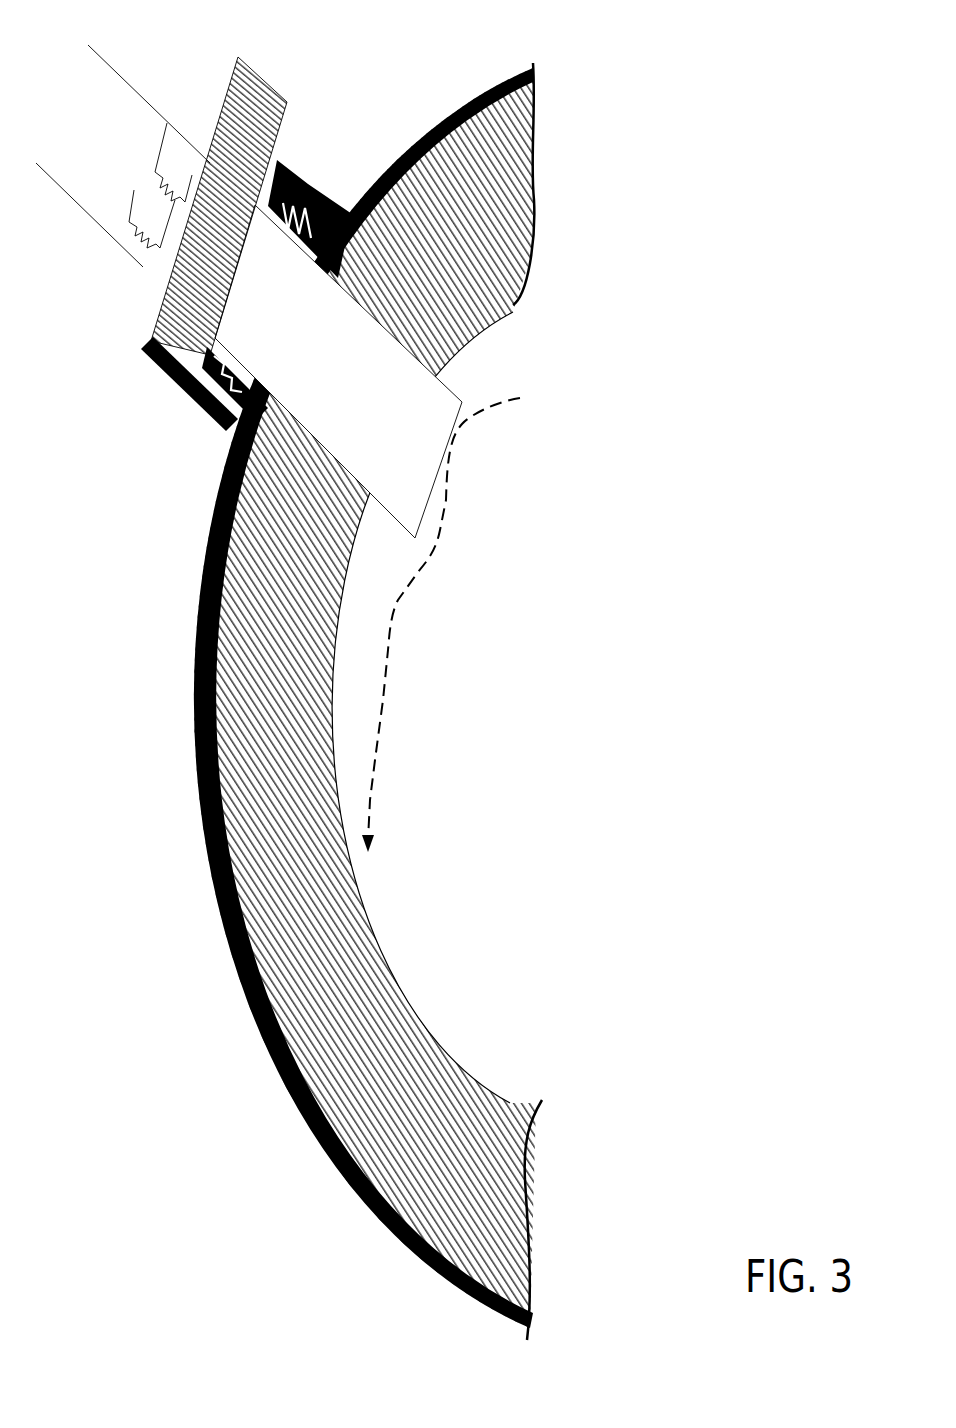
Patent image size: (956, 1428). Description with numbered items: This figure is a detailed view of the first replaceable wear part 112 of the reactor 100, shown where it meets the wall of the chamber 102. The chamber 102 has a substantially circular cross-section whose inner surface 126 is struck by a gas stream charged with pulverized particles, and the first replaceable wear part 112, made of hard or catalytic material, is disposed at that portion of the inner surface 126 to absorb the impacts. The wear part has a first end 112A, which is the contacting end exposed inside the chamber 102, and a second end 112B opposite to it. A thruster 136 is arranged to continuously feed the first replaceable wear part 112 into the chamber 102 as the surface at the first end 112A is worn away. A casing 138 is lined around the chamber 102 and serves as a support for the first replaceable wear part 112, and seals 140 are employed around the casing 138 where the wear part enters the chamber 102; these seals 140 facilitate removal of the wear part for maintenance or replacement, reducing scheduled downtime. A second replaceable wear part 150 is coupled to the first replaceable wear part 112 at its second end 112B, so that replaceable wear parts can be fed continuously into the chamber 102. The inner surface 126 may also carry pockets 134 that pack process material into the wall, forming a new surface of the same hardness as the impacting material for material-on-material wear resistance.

The reactor 100 is at (520, 548).
The chamber 102 is at (197, 725).
The first replaceable wear part 112 is at (192, 152).
The first end 112A is at (398, 502).
The second end 112B is at (140, 233).
The inner surface 126 is at (420, 990).
The pockets 134 is at (297, 818).
The thruster 136 is at (152, 318).
The casing 138 is at (307, 215).
The seals 140 is at (283, 185).
The second replaceable wear part 150 is at (77, 145).